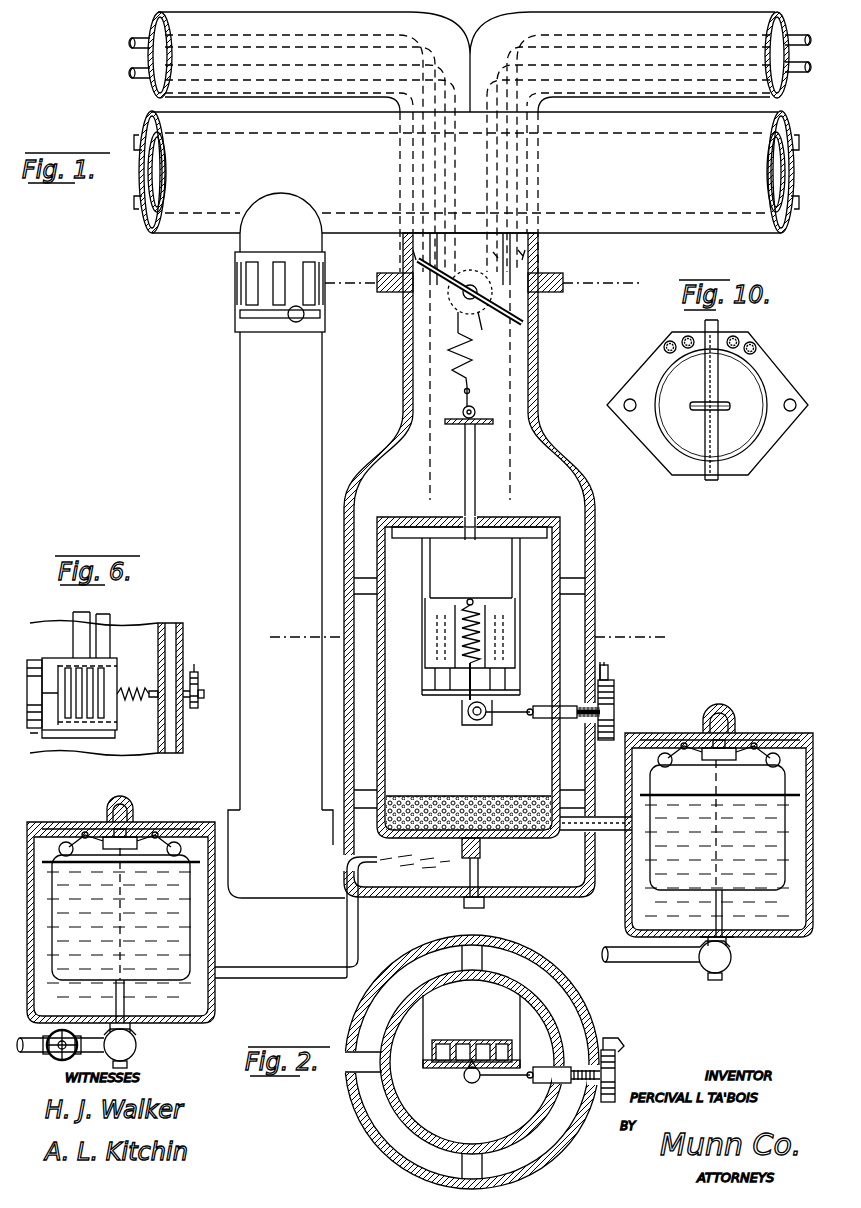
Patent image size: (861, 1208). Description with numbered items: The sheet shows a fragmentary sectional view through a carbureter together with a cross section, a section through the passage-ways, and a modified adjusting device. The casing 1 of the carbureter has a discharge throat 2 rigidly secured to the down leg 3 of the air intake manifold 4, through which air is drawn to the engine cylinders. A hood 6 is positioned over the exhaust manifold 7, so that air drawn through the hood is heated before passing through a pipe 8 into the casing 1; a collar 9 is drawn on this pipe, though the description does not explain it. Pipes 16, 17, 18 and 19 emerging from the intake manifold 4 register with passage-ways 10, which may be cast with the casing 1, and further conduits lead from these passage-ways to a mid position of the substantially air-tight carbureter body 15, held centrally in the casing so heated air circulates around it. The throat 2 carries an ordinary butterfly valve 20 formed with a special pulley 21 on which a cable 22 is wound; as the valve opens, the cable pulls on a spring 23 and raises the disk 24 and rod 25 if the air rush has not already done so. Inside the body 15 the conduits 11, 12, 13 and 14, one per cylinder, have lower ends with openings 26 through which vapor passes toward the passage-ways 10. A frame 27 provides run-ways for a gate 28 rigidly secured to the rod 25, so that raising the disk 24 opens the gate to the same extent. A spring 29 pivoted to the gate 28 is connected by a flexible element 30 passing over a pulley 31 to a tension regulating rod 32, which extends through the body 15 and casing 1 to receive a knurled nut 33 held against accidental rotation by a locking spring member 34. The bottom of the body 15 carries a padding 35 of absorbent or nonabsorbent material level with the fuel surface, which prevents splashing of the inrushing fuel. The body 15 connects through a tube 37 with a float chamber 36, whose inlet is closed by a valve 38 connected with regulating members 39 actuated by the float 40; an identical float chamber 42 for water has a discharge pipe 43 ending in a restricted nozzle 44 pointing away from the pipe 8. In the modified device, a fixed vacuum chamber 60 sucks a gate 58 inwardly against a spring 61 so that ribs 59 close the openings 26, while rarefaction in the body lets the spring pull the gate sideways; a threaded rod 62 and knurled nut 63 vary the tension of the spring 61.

In FIG. 1, the casing 1 is at (596, 566).
In FIG. 2, the casing 1 is at (586, 1012).
In FIG. 1, the discharge throat 2 is at (539, 378).
In FIG. 1, the down leg 3 is at (540, 284).
In FIG. 1, the air intake manifold 4 is at (600, 14).
In FIG. 1, the hood 6 is at (650, 228).
In FIG. 1, the exhaust manifold 7 is at (140, 186).
In FIG. 1, the pipe 8 is at (286, 545).
In FIG. 1, the slotted collar 9 is at (249, 300).
In FIG. 1, the passage-ways 10 is at (488, 282).
In FIG. 10, the passage-ways 10 is at (664, 347).
In FIG. 2, the conduit 11 is at (440, 1044).
In FIG. 2, the conduit 12 is at (462, 1044).
In FIG. 2, the conduit 13 is at (484, 1044).
In FIG. 2, the conduit 14 is at (504, 1044).
In FIG. 1, the carbureter body 15 is at (562, 632).
In FIG. 2, the carbureter body 15 is at (530, 990).
In FIG. 1, the pipe 16 is at (426, 258).
In FIG. 1, the pipe 17 is at (412, 243).
In FIG. 1, the pipe 18 is at (493, 253).
In FIG. 1, the pipe 19 is at (517, 252).
In FIG. 1, the butterfly valve 20 is at (522, 318).
In FIG. 10, the butterfly valve 20 is at (682, 445).
In FIG. 10, the pulley 21 is at (720, 412).
In FIG. 1, the cable 22 is at (448, 352).
In FIG. 1, the spring 23 is at (463, 387).
In FIG. 1, the disk 24 is at (465, 425).
In FIG. 1, the rod 25 is at (465, 470).
In FIG. 1, the openings 26 is at (444, 692).
In FIG. 1, the frame 27 is at (424, 590).
In FIG. 2, the frame 27 is at (422, 1068).
In FIG. 1, the gate 28 is at (437, 616).
In FIG. 2, the gate 28 is at (446, 1064).
In FIG. 1, the spring 29 is at (482, 632).
In FIG. 2, the spring 29 is at (474, 1084).
In FIG. 1, the flexible element 30 is at (506, 714).
In FIG. 2, the flexible element 30 is at (512, 1080).
In FIG. 1, the pulley 31 is at (474, 721).
In FIG. 1, the tension regulating rod 32 is at (546, 719).
In FIG. 2, the tension regulating rod 32 is at (566, 1075).
In FIG. 1, the nut 33 is at (614, 704).
In FIG. 2, the nut 33 is at (607, 1102).
In FIG. 1, the locking spring member 34 is at (608, 690).
In FIG. 2, the locking spring member 34 is at (620, 1040).
In FIG. 1, the filter bed 35 is at (532, 836).
In FIG. 1, the float chamber 36 is at (806, 910).
In FIG. 1, the tube 37 is at (622, 832).
In FIG. 1, the valve 38 is at (727, 942).
In FIG. 1, the regulating members 39 is at (722, 754).
In FIG. 1, the float 40 is at (720, 847).
In FIG. 1, the float chamber 42 is at (216, 1002).
In FIG. 1, the discharge pipe 43 is at (276, 967).
In FIG. 1, the nozzle 44 is at (380, 875).
In FIG. 6, the gate 58 is at (110, 682).
In FIG. 6, the ribs 59 is at (70, 735).
In FIG. 6, the vacuum chamber 60 is at (47, 676).
In FIG. 6, the spring 61 is at (131, 702).
In FIG. 6, the rod 62 is at (196, 708).
In FIG. 6, the knurled nut 63 is at (198, 684).